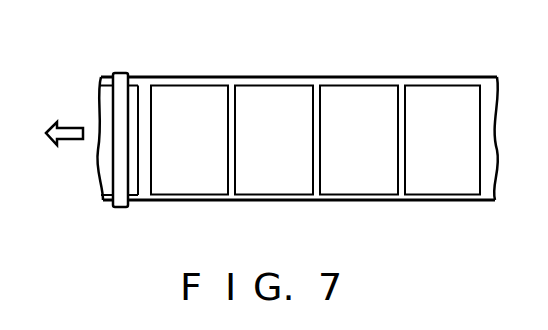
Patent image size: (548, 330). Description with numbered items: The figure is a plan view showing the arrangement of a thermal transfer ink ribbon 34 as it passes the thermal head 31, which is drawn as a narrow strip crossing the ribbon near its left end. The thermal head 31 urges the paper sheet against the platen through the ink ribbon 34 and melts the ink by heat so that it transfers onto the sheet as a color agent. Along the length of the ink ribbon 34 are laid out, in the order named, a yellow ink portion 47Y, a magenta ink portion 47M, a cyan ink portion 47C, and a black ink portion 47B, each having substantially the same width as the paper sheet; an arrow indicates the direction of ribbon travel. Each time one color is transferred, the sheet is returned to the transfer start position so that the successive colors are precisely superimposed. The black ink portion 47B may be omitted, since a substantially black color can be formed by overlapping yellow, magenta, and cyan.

The thermal head 31 is at (119, 73).
The ink ribbon 34 is at (332, 77).
The yellow ink portion 47Y is at (193, 187).
The magenta ink portion 47M is at (284, 187).
The cyan ink portion 47C is at (367, 187).
The black ink portion 47B is at (452, 187).